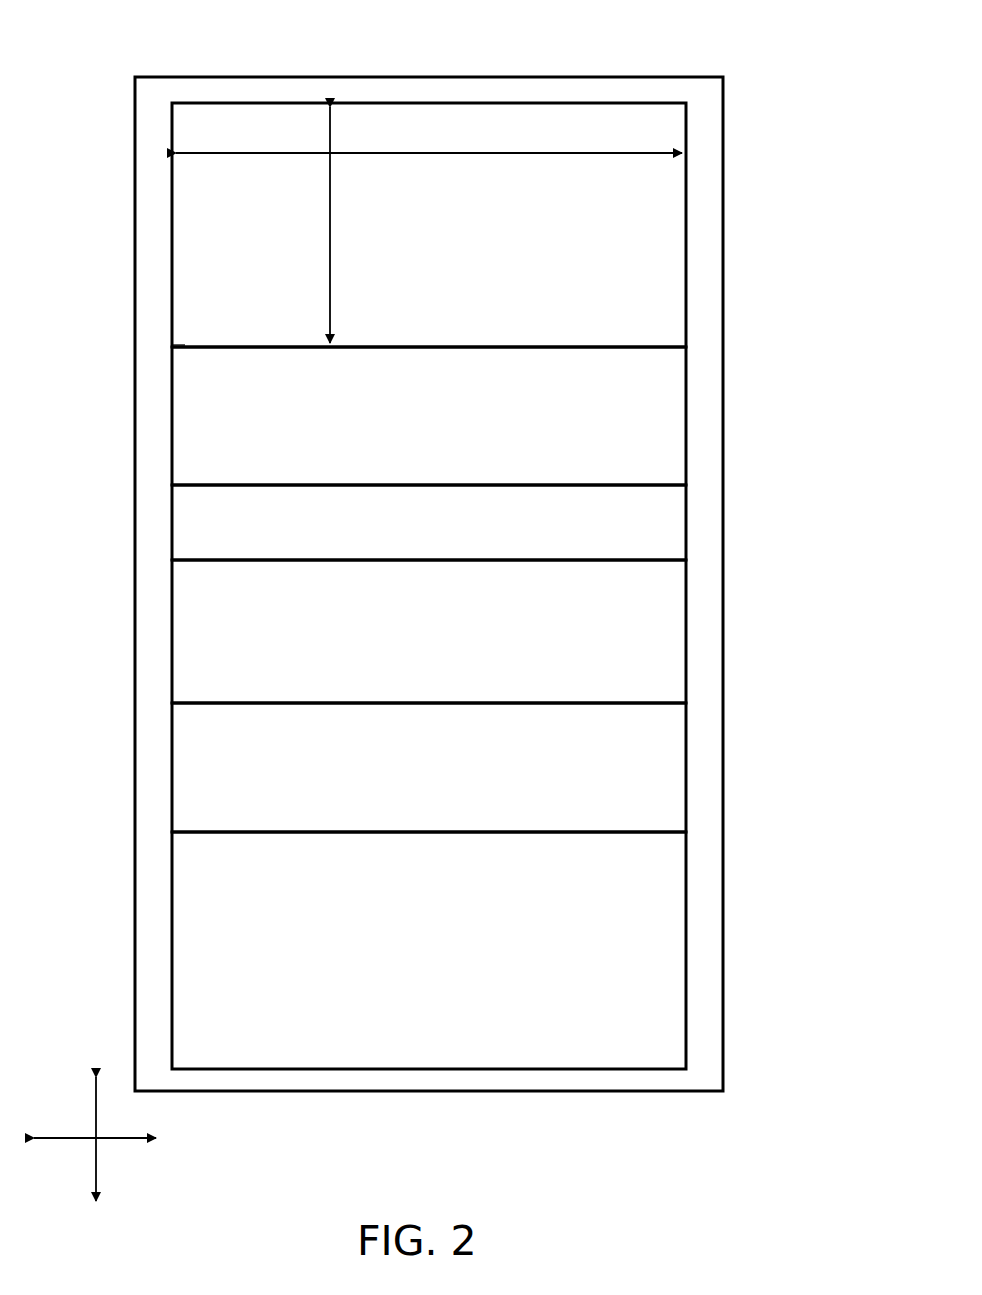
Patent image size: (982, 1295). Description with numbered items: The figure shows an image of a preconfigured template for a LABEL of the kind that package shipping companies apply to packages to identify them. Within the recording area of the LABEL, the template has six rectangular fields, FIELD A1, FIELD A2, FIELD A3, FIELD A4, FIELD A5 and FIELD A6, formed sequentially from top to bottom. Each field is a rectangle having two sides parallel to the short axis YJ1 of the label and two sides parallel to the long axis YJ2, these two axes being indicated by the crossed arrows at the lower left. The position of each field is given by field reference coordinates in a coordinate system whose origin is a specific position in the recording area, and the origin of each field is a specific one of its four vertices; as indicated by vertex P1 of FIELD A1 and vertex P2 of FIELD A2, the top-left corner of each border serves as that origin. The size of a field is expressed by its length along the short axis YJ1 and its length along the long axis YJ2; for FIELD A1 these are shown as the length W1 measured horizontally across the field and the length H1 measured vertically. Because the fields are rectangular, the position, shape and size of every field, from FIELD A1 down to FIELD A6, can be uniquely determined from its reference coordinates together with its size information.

The label LABEL is at (650, 77).
The vertex of field A1 P1 is at (172, 103).
The vertex of field A2 P2 is at (172, 345).
The field A1 FIELD A1 is at (663, 256).
The field A2 FIELD A2 is at (663, 427).
The field A3 FIELD A3 is at (663, 528).
The field A4 FIELD A4 is at (663, 640).
The field A5 FIELD A5 is at (663, 772).
The field A6 FIELD A6 is at (663, 984).
The length W1 is at (475, 154).
The length H1 is at (330, 265).
The short axis YJ1 is at (136, 1140).
The long axis YJ2 is at (93, 1155).